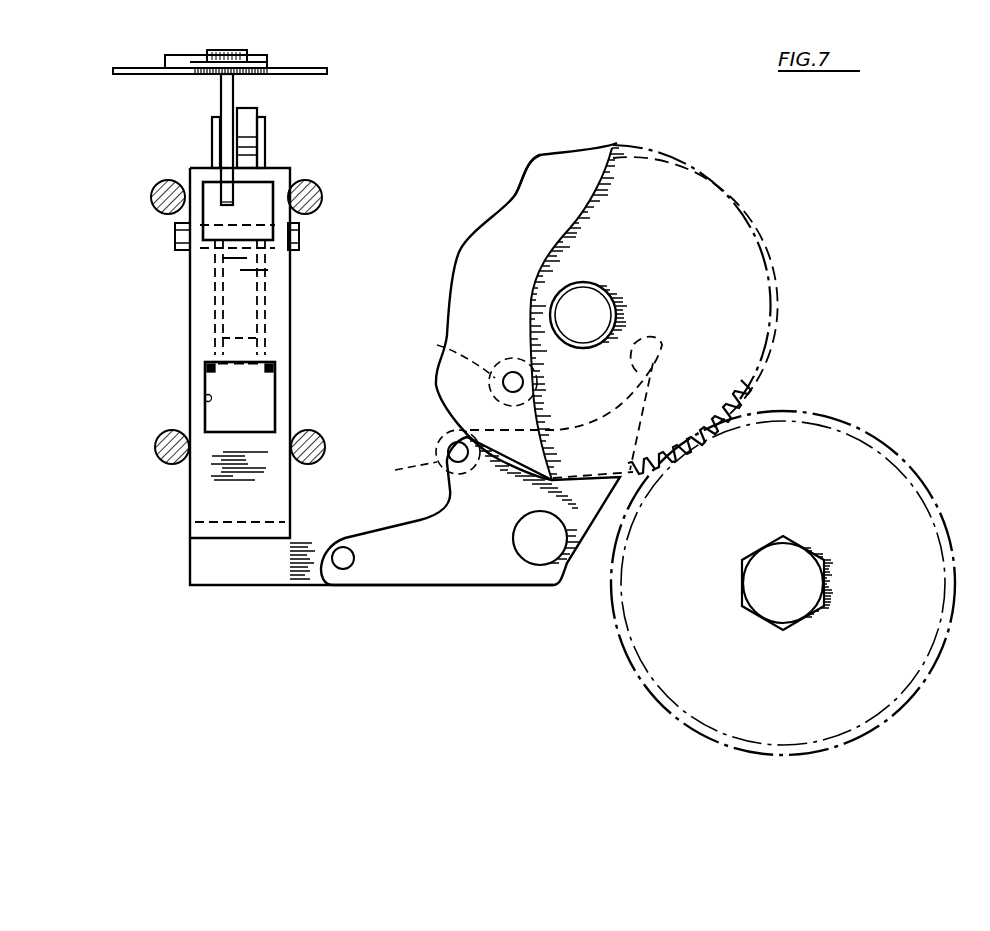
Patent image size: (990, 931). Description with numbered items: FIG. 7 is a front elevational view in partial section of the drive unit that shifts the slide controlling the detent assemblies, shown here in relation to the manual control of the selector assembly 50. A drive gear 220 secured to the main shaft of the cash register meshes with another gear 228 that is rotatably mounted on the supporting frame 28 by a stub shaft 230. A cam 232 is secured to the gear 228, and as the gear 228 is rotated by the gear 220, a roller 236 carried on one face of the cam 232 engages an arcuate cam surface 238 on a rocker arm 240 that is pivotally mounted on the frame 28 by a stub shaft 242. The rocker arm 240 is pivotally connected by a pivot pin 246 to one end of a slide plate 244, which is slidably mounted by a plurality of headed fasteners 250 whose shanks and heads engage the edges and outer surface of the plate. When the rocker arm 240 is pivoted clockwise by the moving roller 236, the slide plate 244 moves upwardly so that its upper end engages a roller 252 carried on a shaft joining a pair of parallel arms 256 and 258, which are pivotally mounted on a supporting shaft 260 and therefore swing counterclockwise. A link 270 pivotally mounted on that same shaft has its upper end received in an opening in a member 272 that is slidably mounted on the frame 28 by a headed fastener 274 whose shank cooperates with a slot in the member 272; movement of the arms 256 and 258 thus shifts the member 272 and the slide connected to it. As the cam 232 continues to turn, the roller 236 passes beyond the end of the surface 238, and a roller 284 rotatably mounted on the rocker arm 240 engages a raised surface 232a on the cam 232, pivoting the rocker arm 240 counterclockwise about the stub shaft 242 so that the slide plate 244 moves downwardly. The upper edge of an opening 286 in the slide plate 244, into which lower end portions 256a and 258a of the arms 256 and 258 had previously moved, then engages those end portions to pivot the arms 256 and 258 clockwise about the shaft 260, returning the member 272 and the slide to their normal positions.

The supporting frame 28 is at (148, 68).
The member 272 is at (300, 50).
The headed fastener 274 is at (245, 52).
The link 270 is at (222, 94).
The roller 252 is at (260, 102).
The parallel arm 256 is at (213, 138).
The parallel arm 258 is at (266, 138).
The selector assembly 50 is at (328, 156).
The headed fasteners 250 is at (158, 190).
The supporting shaft 260 is at (299, 236).
The slide plate 244 is at (198, 485).
The lower end portion 256a is at (207, 374).
The lower end portion 258a is at (274, 374).
The opening 286 is at (204, 398).
The rocker arm 240 is at (390, 573).
The pivot pin 246 is at (345, 566).
The stub shaft 242 is at (542, 555).
The roller 284 is at (423, 454).
The cam 232 is at (503, 215).
The raised surface 232a is at (527, 172).
The stub shaft 230 is at (600, 305).
The roller 236 is at (502, 380).
The arcuate cam surface 238 is at (632, 348).
The gear 228 is at (736, 300).
The drive gear 220 is at (885, 470).